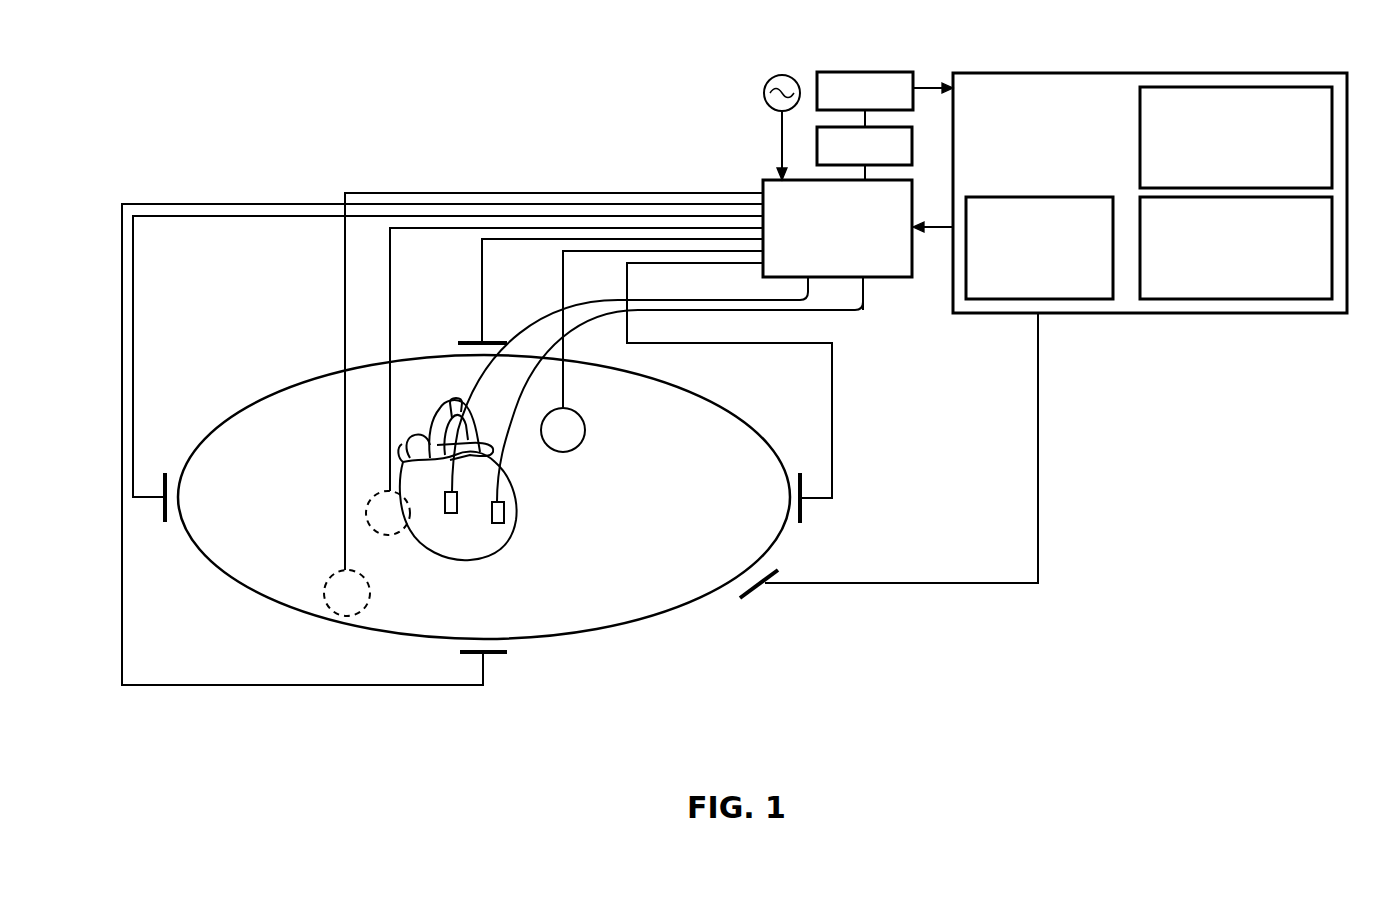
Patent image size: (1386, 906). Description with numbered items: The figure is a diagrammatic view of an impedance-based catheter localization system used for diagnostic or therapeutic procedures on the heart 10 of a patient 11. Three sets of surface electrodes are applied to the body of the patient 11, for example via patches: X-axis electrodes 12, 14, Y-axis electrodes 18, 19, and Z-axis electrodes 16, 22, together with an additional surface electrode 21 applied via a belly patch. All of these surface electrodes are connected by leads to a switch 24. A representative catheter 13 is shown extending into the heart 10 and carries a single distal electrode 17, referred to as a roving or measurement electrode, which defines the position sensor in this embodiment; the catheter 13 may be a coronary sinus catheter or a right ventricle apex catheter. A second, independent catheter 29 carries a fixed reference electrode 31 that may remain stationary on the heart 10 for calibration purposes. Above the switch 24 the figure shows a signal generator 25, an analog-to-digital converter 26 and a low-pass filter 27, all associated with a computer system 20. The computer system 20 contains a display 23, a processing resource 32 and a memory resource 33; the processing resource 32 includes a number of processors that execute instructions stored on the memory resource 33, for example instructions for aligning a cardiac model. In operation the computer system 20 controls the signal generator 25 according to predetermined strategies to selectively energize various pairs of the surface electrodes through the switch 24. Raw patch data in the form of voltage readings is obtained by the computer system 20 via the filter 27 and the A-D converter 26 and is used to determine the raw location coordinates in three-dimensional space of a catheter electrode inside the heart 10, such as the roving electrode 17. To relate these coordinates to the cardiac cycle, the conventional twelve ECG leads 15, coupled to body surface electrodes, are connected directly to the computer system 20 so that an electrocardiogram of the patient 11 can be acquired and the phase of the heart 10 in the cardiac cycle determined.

The heart 10 is at (677, 411).
The patient 11 is at (708, 398).
The X-axis electrode 12 is at (468, 341).
The catheter 13 is at (860, 312).
The X-axis electrode 14 is at (495, 653).
The ECG leads 15 is at (1038, 428).
The Z-axis electrode 16 is at (567, 388).
The distal electrode 17 is at (503, 512).
The Y-axis electrode 18 is at (163, 512).
The Y-axis electrode 19 is at (803, 510).
The computer system 20 is at (1058, 72).
The surface electrode 21 is at (347, 505).
The Z-axis electrode 22 is at (388, 415).
The display 23 is at (1039, 248).
The switch 24 is at (858, 228).
The signal generator 25 is at (766, 82).
The analog-to-digital converter 26 is at (866, 72).
The low-pass filter 27 is at (817, 145).
The second catheter 29 is at (623, 436).
The fixed reference electrode 31 is at (452, 514).
The processing resource 32 is at (1236, 137).
The memory resource 33 is at (1236, 248).